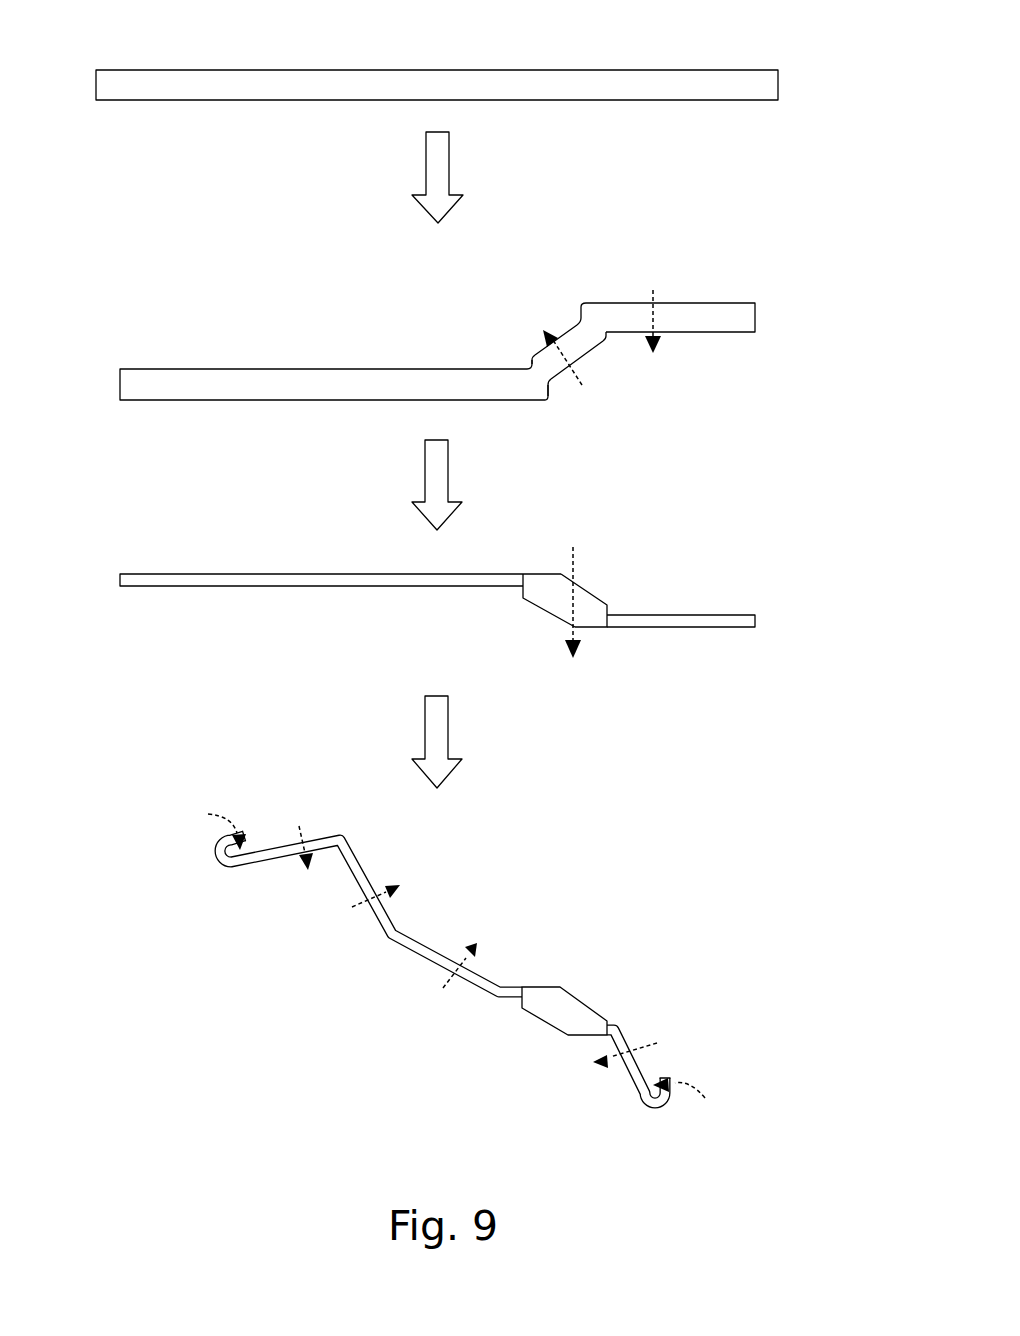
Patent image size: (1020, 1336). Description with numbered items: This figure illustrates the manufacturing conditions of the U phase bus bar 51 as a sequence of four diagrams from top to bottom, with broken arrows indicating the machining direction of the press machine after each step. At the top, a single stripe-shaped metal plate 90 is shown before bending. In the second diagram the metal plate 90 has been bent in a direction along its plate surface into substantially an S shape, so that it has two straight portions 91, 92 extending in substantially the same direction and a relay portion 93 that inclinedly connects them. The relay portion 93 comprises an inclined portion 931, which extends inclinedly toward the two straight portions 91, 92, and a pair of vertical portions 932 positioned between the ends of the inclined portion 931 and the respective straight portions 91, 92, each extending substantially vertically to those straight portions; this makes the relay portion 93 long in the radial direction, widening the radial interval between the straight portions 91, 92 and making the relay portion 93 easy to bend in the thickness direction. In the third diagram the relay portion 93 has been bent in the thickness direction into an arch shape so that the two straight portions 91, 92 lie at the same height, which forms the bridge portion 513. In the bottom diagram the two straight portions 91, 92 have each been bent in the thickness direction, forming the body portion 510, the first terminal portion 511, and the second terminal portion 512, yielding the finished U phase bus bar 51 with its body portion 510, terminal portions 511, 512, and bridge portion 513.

The metal plate 90 is at (177, 86).
The straight portion 91 is at (193, 387).
The straight portion 92 is at (705, 318).
The relay portion 93 is at (472, 245).
The inclined portion 931 is at (575, 347).
The vertical portion 932 is at (533, 375).
The bridge portion 513 is at (560, 600).
The U phase bus bar 51 is at (411, 1046).
The body portion 510 is at (410, 941).
The second terminal portion 512 is at (217, 858).
The first terminal portion 511 is at (657, 1103).